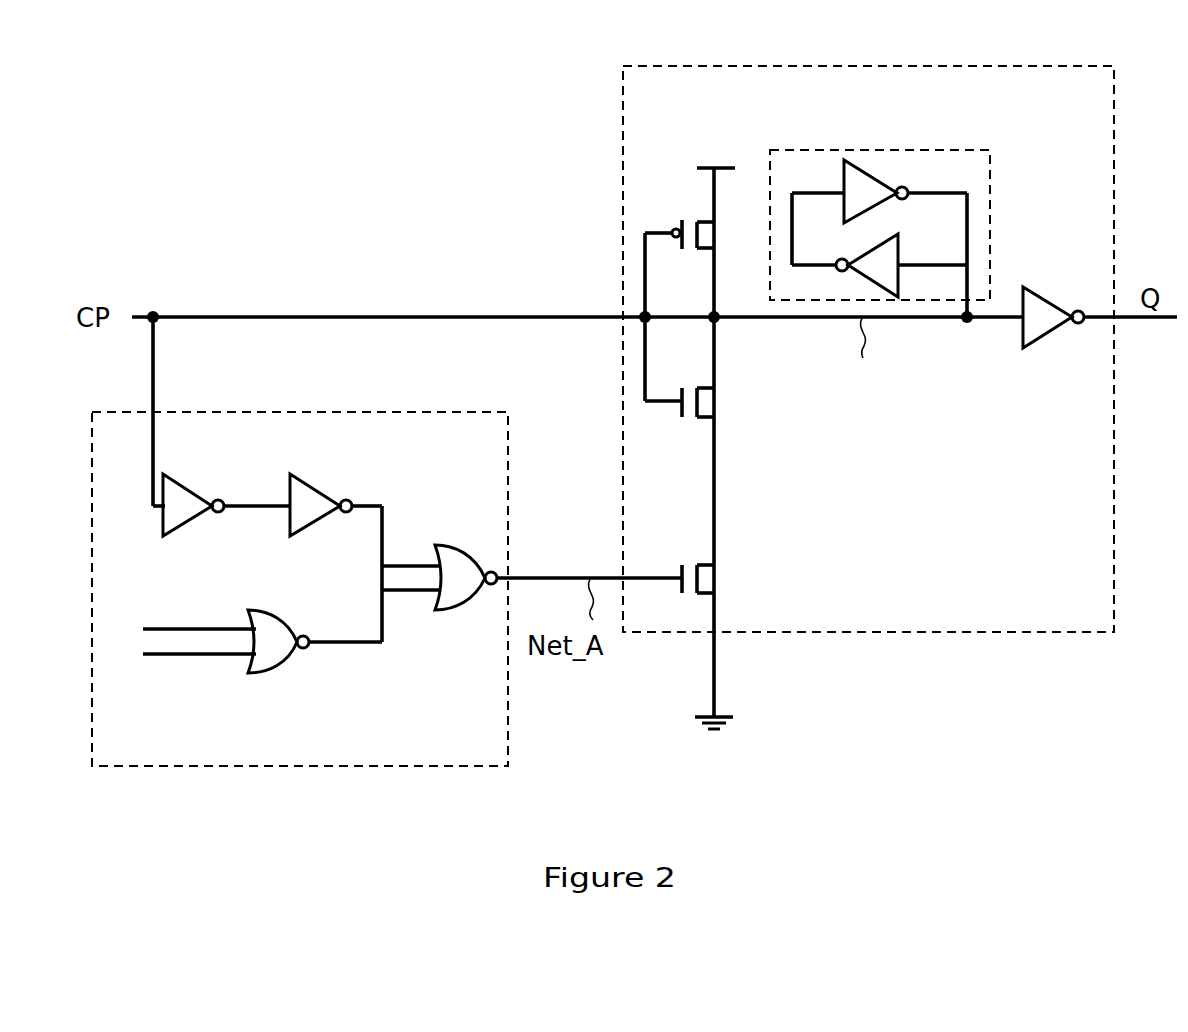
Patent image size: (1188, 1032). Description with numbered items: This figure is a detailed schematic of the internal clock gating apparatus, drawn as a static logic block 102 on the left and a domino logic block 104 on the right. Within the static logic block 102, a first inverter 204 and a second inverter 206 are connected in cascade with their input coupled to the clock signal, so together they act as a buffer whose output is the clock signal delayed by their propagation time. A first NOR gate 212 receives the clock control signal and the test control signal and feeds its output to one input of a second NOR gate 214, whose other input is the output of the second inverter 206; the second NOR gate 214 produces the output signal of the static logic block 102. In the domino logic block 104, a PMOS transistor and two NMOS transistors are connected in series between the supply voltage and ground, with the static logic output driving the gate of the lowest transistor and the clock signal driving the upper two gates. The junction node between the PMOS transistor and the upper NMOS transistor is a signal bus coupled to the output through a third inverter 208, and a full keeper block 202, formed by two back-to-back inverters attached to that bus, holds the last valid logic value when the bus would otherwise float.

The static logic block 102 is at (365, 766).
The domino logic block 104 is at (993, 632).
The full keeper block 202 is at (915, 150).
The first inverter 204 is at (196, 528).
The second inverter 206 is at (327, 528).
The third inverter 208 is at (1052, 338).
The first NOR gate 212 is at (280, 675).
The second NOR gate 214 is at (467, 612).